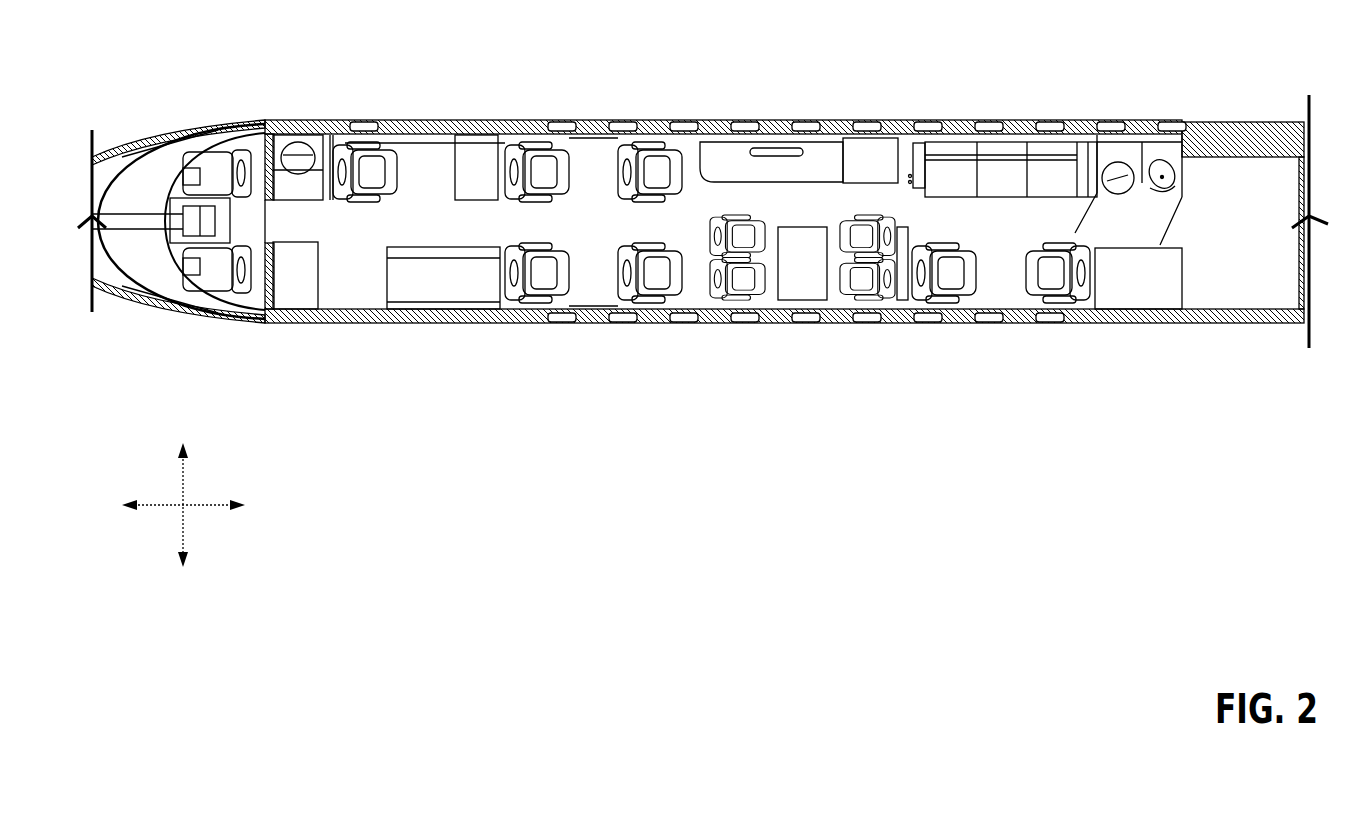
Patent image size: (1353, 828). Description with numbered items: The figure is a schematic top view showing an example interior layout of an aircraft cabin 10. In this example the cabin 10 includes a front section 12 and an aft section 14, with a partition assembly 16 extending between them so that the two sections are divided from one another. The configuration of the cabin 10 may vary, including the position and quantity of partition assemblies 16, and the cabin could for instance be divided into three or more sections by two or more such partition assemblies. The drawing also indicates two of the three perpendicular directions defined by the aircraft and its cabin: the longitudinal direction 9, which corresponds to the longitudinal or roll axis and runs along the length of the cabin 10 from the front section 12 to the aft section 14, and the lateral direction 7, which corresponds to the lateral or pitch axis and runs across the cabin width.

The aircraft cabin 10 is at (413, 100).
The front section 12 is at (693, 180).
The aft section 14 is at (1057, 212).
The partition assembly 16 is at (908, 138).
The longitudinal direction 9 is at (158, 505).
The lateral direction 7 is at (183, 520).